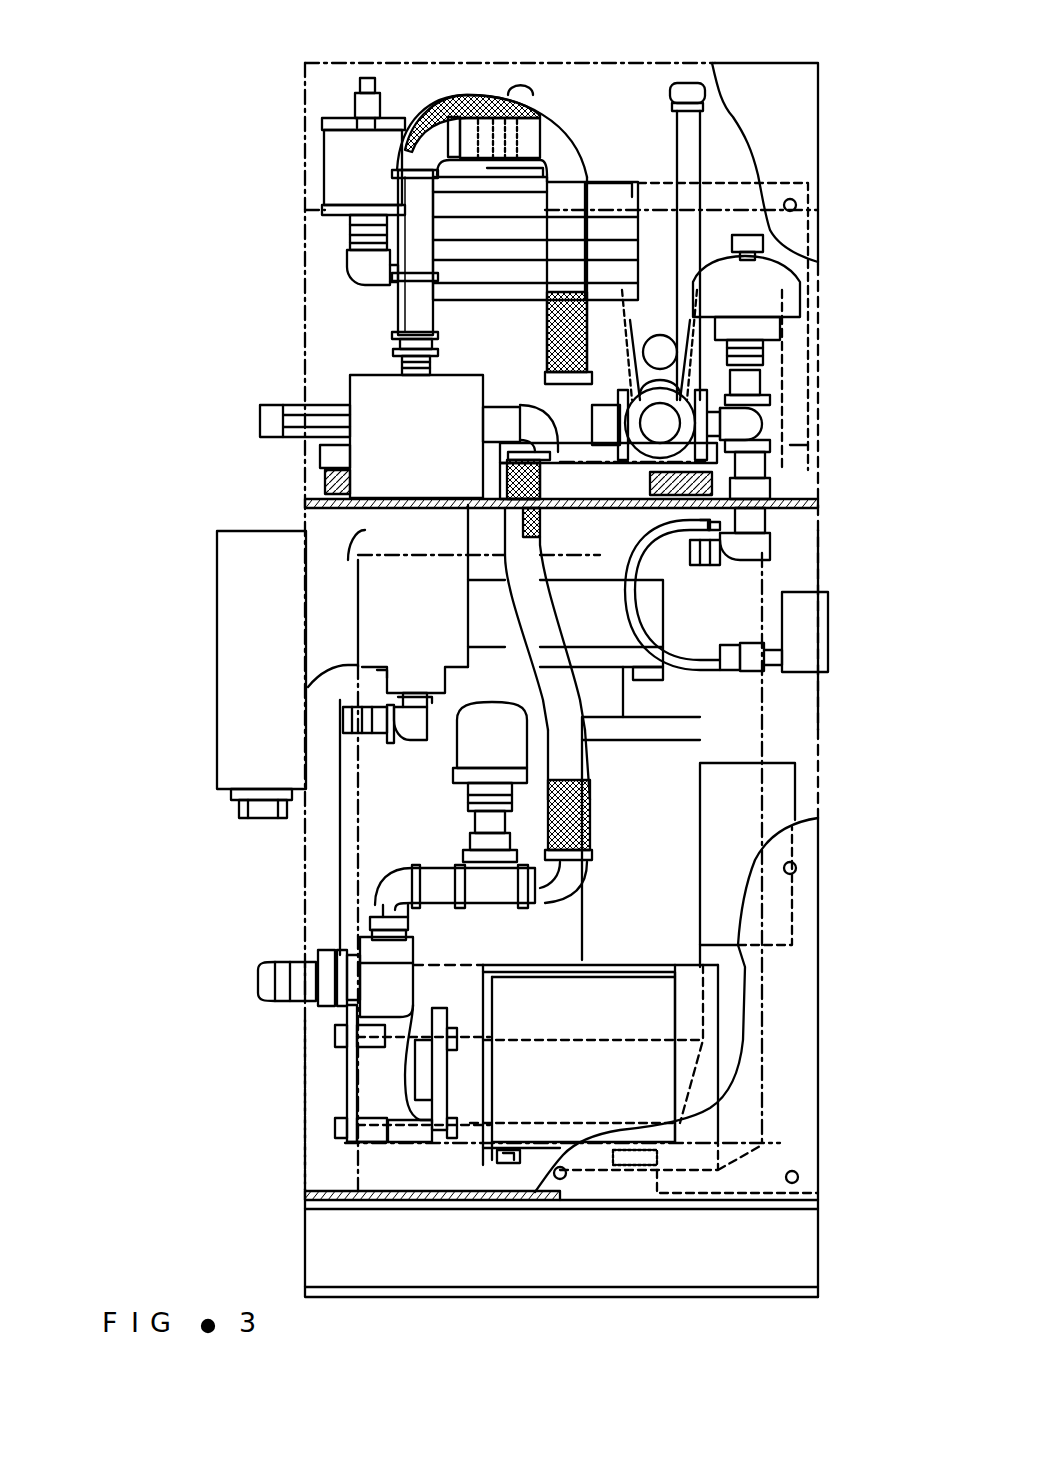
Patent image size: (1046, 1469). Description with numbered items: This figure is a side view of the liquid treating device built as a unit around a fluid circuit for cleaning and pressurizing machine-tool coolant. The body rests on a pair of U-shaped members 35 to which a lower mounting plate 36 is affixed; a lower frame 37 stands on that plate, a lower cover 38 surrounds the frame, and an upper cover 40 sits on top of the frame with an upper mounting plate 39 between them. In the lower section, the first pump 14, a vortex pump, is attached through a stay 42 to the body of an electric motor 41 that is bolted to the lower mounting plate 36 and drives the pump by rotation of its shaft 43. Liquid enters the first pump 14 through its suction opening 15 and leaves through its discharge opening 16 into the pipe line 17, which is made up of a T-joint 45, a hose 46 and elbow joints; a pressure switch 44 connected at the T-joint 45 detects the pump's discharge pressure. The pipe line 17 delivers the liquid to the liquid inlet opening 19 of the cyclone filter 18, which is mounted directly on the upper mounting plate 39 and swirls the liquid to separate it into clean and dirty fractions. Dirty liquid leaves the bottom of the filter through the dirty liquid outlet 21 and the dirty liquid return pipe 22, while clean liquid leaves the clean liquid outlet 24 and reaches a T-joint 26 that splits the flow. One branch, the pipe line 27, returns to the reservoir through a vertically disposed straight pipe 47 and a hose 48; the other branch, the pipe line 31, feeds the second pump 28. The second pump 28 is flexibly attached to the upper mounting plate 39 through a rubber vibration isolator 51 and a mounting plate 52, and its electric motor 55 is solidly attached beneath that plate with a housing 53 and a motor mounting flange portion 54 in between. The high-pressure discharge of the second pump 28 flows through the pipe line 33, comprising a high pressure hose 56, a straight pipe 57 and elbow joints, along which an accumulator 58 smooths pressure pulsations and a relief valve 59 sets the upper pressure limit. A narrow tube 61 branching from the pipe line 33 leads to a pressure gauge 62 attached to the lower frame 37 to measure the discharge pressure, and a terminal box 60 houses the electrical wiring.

The first pump 14 is at (370, 1060).
The suction opening 15 is at (345, 970).
The discharge opening 16 is at (398, 953).
The pipe line 17 is at (580, 885).
The cyclone filter 18 is at (360, 390).
The liquid inlet opening 19 is at (505, 415).
The dirty liquid outlet 21 is at (410, 715).
The dirty liquid return pipe 22 is at (375, 735).
The clean liquid outlet 24 is at (395, 370).
The T-joint 26 is at (432, 318).
The pipe line 27 is at (553, 140).
The second pump 28 is at (455, 243).
The pipe line 31 is at (492, 100).
The pipe line 33 is at (262, 420).
The U-shaped members 35 is at (335, 1235).
The lower mounting plate 36 is at (405, 1195).
The lower frame 37 is at (305, 1135).
The lower cover 38 is at (805, 1070).
The upper mounting plate 39 is at (790, 510).
The upper cover 40 is at (808, 153).
The electric motor 41 is at (572, 1010).
The stay 42 is at (425, 1020).
The shaft 43 is at (412, 1087).
The pressure switch 44 is at (487, 720).
The T-joint 45 is at (485, 885).
The hose 46 is at (588, 775).
The straight pipe 47 is at (415, 200).
The hose 48 is at (565, 170).
The rubber vibration isolator 51 is at (333, 480).
The mounting plate 52 is at (325, 452).
The housing 53 is at (505, 599).
The motor mounting flange portion 54 is at (594, 670).
The electric motor 55 is at (375, 848).
The high pressure hose 56 is at (775, 370).
The straight pipe 57 is at (597, 597).
The accumulator 58 is at (775, 300).
The relief valve 59 is at (765, 488).
The terminal box 60 is at (240, 700).
The narrow tube 61 is at (640, 625).
The pressure gauge 62 is at (805, 640).